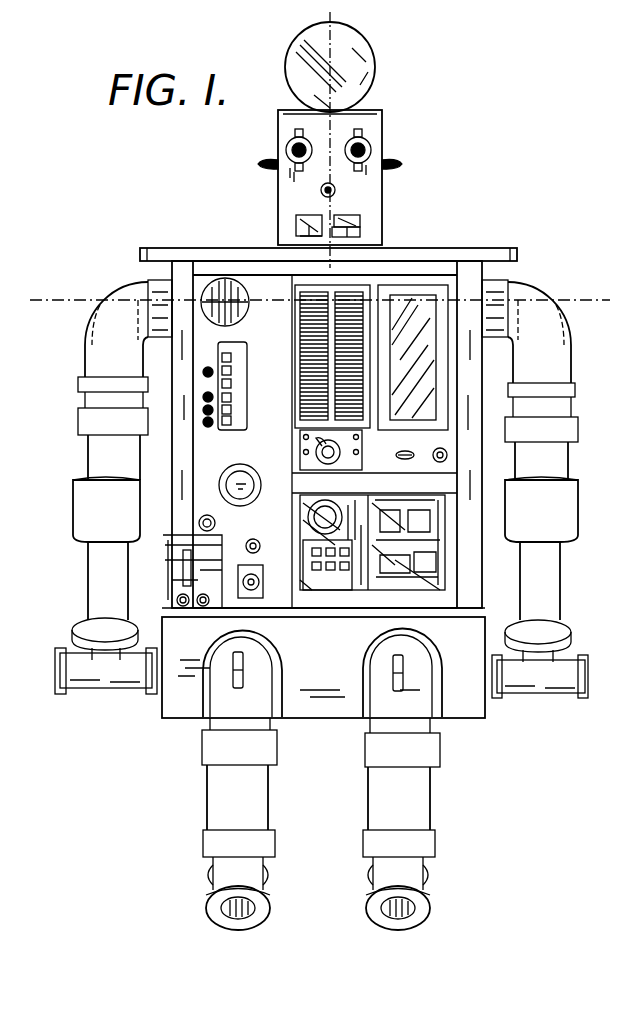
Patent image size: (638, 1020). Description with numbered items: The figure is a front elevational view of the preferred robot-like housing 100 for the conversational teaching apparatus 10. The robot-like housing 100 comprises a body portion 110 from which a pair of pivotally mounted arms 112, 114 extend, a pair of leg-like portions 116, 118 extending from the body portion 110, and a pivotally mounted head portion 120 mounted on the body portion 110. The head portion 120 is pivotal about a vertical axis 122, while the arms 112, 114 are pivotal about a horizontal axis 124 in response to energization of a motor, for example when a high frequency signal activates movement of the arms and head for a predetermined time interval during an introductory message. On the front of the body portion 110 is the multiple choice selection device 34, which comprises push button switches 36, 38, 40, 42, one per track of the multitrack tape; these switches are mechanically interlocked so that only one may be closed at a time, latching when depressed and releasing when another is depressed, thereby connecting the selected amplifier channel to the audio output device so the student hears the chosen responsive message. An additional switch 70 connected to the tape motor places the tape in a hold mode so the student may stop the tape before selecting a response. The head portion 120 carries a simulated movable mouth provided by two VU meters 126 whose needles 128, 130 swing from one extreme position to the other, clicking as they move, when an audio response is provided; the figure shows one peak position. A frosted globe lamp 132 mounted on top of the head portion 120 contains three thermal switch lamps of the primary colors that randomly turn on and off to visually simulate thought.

The teaching apparatus 10 is at (403, 554).
The multiple choice selection device 34 is at (218, 432).
The switch 36 is at (238, 425).
The switch 38 is at (249, 357).
The switch 40 is at (245, 409).
The switch 42 is at (239, 397).
The additional switch 70 is at (237, 350).
The robot-like housing 100 is at (466, 220).
The body portion 110 is at (483, 251).
The arm 112 is at (115, 290).
The arm 114 is at (538, 292).
The leg-like portion 116 is at (205, 718).
The leg-like portion 118 is at (432, 722).
The head portion 120 is at (382, 142).
The vertical axis 122 is at (334, 18).
The horizontal axis 124 is at (566, 306).
The meters 126 is at (362, 226).
The needle 128 is at (360, 236).
The needle 130 is at (296, 231).
The globe lamp 132 is at (376, 64).